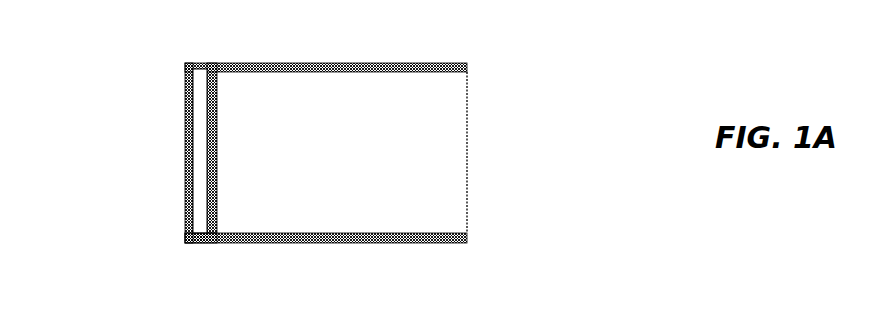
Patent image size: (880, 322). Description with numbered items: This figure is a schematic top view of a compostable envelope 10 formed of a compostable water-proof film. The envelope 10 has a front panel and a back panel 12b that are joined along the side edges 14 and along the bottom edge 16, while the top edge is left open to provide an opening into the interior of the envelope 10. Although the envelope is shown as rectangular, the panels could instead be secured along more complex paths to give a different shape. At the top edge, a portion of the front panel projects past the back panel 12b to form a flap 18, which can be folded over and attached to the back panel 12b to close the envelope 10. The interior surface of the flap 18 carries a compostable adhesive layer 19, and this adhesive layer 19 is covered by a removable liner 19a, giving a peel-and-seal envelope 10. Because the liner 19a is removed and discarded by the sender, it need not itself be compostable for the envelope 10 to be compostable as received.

The compostable envelope 10 is at (505, 150).
The back panel 12b is at (405, 130).
The side edges 14 is at (305, 63).
The bottom edge 16 is at (467, 187).
The flap 18 is at (195, 243).
The compostable adhesive layer 19 is at (185, 173).
The removable liner 19a is at (202, 118).